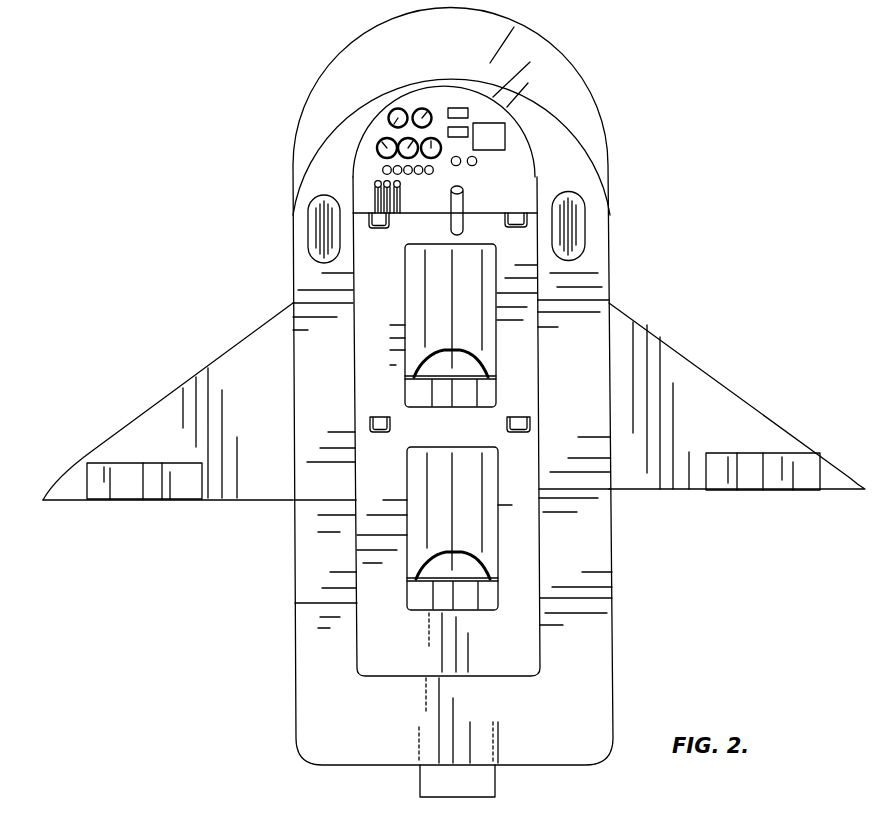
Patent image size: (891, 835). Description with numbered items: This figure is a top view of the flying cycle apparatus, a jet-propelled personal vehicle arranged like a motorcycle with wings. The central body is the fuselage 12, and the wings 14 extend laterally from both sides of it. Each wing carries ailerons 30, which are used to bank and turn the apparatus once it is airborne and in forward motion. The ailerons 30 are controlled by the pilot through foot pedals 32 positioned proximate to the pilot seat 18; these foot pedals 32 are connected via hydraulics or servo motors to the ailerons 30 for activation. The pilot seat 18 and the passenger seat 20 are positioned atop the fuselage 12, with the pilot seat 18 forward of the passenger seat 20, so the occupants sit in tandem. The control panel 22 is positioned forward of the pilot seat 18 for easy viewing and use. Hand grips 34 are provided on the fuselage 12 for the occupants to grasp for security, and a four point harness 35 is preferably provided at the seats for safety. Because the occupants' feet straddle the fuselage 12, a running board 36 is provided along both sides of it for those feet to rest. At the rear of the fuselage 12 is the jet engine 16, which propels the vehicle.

The fuselage 12 is at (582, 367).
The wings 14 is at (167, 393).
The jet engine 16 is at (437, 783).
The pilot seat 18 is at (410, 288).
The passenger seat 20 is at (485, 607).
The control panel 22 is at (448, 108).
The ailerons 30 is at (178, 498).
The foot pedals 32 is at (308, 215).
The hand grips 34 is at (372, 212).
The four point harness 35 is at (456, 352).
The running board 36 is at (318, 552).